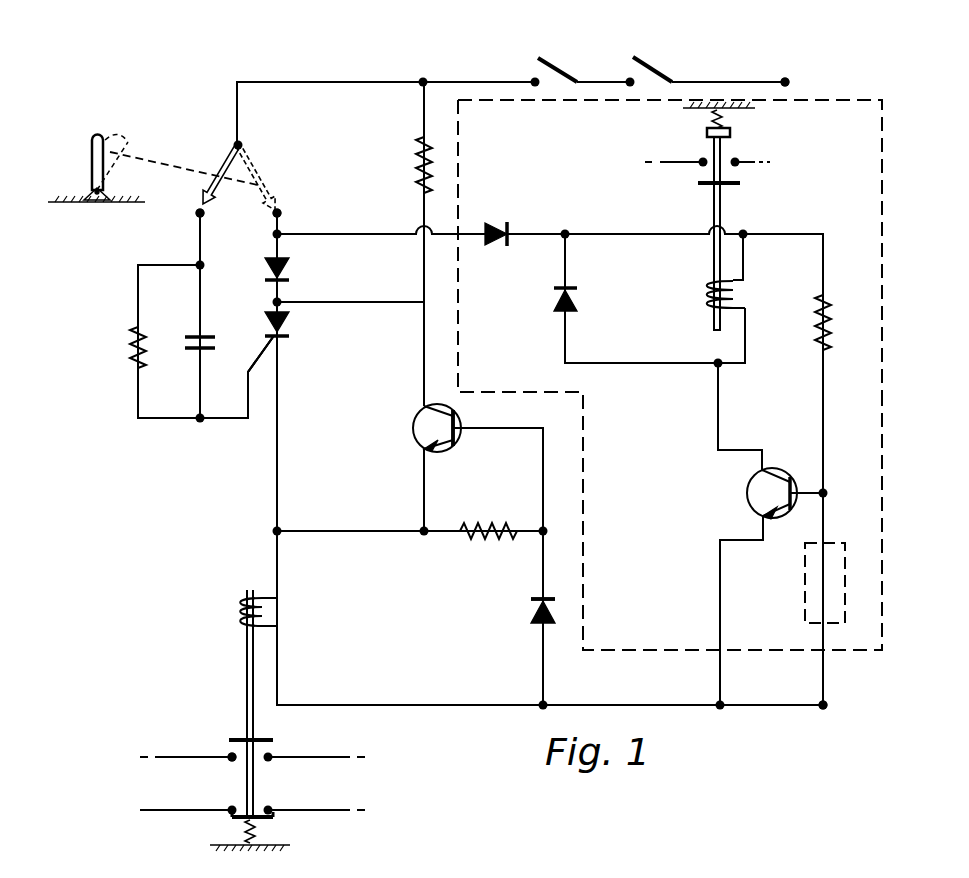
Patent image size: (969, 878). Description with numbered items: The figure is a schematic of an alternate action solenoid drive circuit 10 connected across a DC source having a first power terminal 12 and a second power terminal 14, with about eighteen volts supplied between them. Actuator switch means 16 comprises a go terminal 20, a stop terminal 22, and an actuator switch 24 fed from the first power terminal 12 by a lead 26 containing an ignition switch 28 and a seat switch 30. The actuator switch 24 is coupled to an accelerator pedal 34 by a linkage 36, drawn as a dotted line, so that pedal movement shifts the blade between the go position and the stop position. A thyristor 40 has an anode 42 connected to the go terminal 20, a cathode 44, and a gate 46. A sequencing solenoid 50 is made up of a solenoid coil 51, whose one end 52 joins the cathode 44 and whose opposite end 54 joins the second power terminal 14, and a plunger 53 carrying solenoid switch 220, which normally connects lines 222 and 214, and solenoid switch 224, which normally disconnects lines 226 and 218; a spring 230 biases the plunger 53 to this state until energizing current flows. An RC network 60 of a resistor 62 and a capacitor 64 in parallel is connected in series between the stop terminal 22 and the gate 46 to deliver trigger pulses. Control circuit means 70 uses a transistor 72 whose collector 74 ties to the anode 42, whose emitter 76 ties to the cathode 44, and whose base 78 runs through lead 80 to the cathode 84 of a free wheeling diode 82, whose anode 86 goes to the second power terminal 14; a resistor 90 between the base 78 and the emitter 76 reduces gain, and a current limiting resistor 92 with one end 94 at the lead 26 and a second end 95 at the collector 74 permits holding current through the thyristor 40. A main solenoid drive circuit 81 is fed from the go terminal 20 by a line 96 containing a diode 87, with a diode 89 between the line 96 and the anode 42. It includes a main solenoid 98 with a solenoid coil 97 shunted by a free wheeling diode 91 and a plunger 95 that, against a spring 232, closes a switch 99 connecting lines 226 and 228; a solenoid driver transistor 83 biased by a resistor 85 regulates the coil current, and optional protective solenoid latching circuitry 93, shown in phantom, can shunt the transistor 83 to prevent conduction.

The alternate action solenoid drive circuit 10 is at (356, 389).
The first power terminal 12 is at (785, 78).
The second power terminal 14 is at (825, 708).
The actuator switch means 16 is at (280, 141).
The go terminal 20 is at (280, 211).
The stop terminal 22 is at (204, 216).
The actuator switch 24 is at (235, 147).
The lead 26 is at (341, 80).
The ignition switch 28 is at (556, 60).
The seat switch 30 is at (658, 58).
The accelerator pedal 34 is at (92, 143).
The linkage 36 is at (145, 158).
The thyristor 40 is at (290, 318).
The anode 42 is at (268, 312).
The cathode 44 is at (290, 340).
The gate 46 is at (265, 345).
The sequencing solenoid 50 is at (238, 678).
The solenoid coil 51 is at (240, 598).
The one end 52 is at (280, 598).
The plunger 53 is at (254, 775).
The opposite end 54 is at (280, 626).
The RC network 60 is at (165, 436).
The resistor 62 is at (130, 345).
The capacitor 64 is at (195, 340).
The control circuit means 70 is at (552, 414).
The transistor 72 is at (432, 456).
The collector 74 is at (421, 408).
The emitter 76 is at (425, 450).
The base 78 is at (462, 436).
The lead 80 is at (543, 470).
The main solenoid drive circuit 81 is at (572, 138).
The free wheeling diode 82 is at (529, 608).
The solenoid driver transistor 83 is at (747, 498).
The cathode 84 is at (540, 597).
The resistor 85 is at (815, 318).
The anode 86 is at (540, 621).
The diode 87 is at (493, 224).
The diode 89 is at (290, 263).
The resistor 90 is at (470, 540).
The free wheeling diode 91 is at (553, 303).
The current limiting resistor 92 is at (420, 155).
The protective solenoid latching circuitry 93 is at (800, 586).
The one end 94 is at (422, 130).
The plunger 95 is at (422, 193).
The line 96 is at (403, 237).
The solenoid coil 97 is at (705, 285).
The main solenoid 98 is at (700, 314).
The switch 99 is at (728, 190).
The line 214 is at (320, 810).
The line 218 is at (318, 757).
The solenoid switch 220 is at (228, 803).
The line 222 is at (205, 812).
The solenoid switch 224 is at (228, 768).
The line 226 is at (690, 162).
The line 228 is at (748, 160).
The spring 230 is at (265, 830).
The spring 232 is at (725, 118).